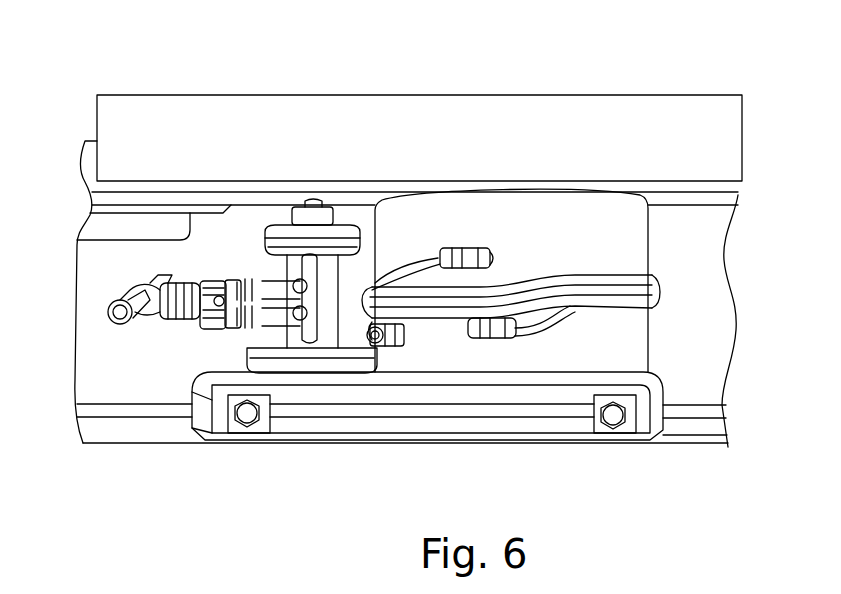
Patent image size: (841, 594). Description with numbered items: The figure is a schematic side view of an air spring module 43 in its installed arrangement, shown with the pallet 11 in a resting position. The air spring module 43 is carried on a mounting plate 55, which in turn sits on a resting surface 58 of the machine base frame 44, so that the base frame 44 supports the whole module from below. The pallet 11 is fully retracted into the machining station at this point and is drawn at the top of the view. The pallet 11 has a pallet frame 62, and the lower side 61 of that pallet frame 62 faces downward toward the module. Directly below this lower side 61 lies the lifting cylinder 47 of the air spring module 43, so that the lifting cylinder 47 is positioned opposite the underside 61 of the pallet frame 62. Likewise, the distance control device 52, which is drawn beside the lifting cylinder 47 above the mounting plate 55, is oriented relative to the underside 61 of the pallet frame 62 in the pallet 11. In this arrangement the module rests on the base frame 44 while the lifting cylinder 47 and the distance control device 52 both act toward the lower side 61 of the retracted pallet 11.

The pallet 11 is at (610, 80).
The pallet frame 62 is at (752, 140).
The lower side of the pallet frame 61 is at (683, 190).
The lifting cylinder 47 is at (662, 261).
The air spring module 43 is at (684, 298).
The distance control device 52 is at (245, 250).
The mounting plate 55 is at (548, 390).
The resting surface 58 is at (682, 398).
The machine base frame 44 is at (695, 463).